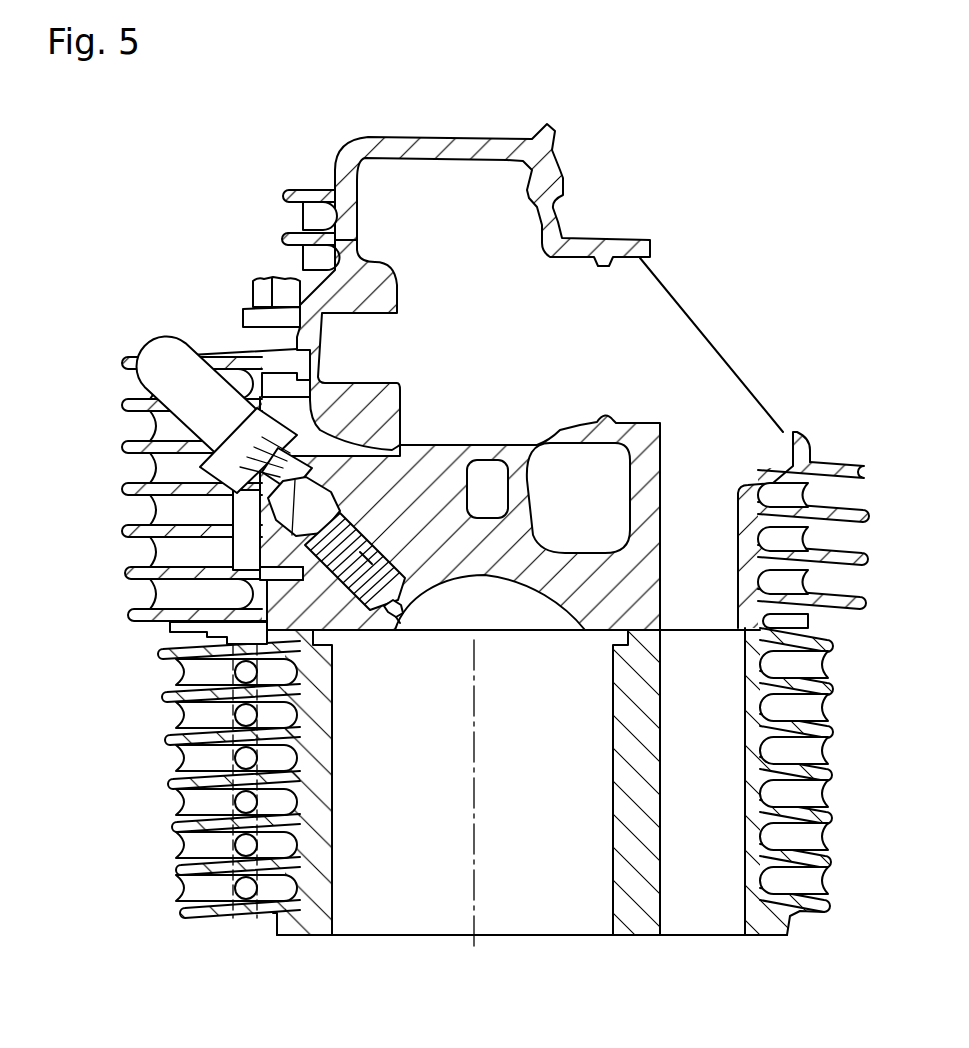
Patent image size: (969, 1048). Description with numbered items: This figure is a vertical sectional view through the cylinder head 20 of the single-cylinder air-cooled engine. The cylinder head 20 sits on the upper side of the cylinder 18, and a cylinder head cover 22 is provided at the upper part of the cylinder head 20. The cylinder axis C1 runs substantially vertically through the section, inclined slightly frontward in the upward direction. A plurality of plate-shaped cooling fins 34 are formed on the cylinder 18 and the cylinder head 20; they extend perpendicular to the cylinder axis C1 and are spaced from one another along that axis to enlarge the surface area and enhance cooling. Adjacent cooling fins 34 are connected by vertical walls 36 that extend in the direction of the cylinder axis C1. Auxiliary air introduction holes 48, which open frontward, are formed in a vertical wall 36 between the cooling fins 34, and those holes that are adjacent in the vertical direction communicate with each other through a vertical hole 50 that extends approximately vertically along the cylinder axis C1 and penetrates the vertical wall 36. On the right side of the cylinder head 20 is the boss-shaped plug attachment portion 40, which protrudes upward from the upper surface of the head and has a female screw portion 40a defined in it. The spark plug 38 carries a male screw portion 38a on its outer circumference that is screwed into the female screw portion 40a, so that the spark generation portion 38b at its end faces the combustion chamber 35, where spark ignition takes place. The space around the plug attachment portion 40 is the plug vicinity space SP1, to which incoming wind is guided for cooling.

The cylinder 18 is at (788, 934).
The cylinder head 20 is at (837, 614).
The cylinder head cover 22 is at (451, 142).
The cooling fins 34 is at (861, 468).
The combustion chamber 35 is at (496, 619).
The vertical wall 36 is at (192, 672).
The spark plug 38 is at (171, 346).
The male screw portion 38a is at (372, 602).
The spark generation portion 38b is at (400, 614).
The plug attachment portion 40 is at (258, 547).
The female screw portion 40a is at (362, 556).
The auxiliary air introduction holes 48 is at (246, 716).
The vertical hole 50 is at (230, 838).
The plug vicinity space SP1 is at (357, 462).
The cylinder axis C1 is at (475, 838).